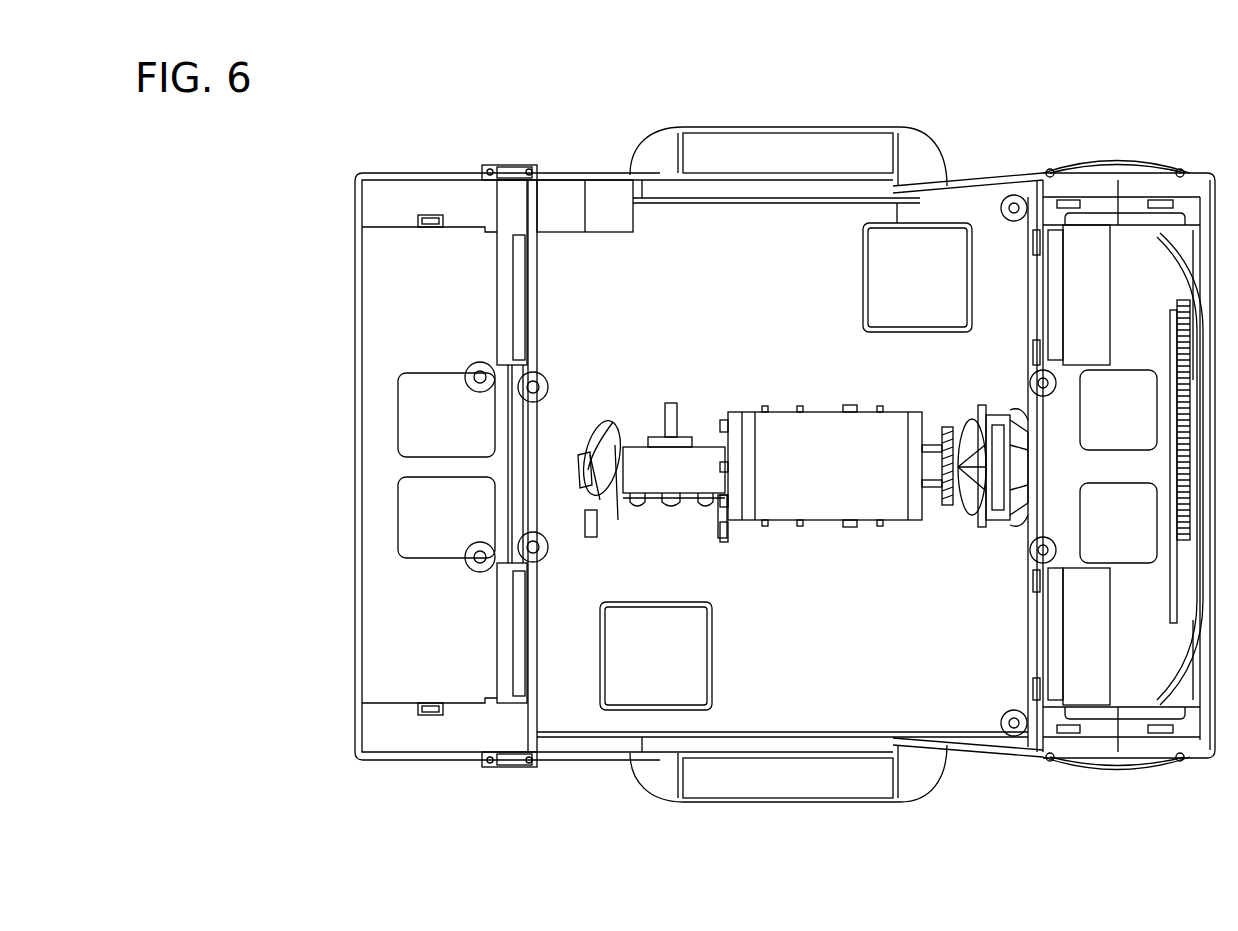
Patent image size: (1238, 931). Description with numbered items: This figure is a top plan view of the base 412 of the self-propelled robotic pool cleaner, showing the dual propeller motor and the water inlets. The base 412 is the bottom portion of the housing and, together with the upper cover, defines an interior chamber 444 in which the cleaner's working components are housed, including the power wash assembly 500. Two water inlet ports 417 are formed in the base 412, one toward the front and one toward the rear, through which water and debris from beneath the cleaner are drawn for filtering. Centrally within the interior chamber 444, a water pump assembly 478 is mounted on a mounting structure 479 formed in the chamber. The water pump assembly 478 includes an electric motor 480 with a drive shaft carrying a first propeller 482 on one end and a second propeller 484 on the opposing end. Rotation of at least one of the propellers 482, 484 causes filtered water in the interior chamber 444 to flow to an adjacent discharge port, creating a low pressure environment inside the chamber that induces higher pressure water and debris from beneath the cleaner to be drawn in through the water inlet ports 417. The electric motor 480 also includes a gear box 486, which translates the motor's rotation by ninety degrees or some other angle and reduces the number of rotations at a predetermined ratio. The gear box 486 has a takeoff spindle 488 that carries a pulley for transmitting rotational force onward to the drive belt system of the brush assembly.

The base 412 is at (597, 762).
The water inlet port 417 is at (866, 238).
The interior chamber 444 is at (963, 716).
The water pump assembly 478 is at (620, 349).
The mounting structure 479 is at (845, 408).
The electric motor 480 is at (866, 522).
The first propeller 482 is at (612, 525).
The second propeller 484 is at (972, 508).
The gear box 486 is at (683, 483).
The takeoff spindle 488 is at (677, 413).
The power wash assembly 500 is at (996, 556).